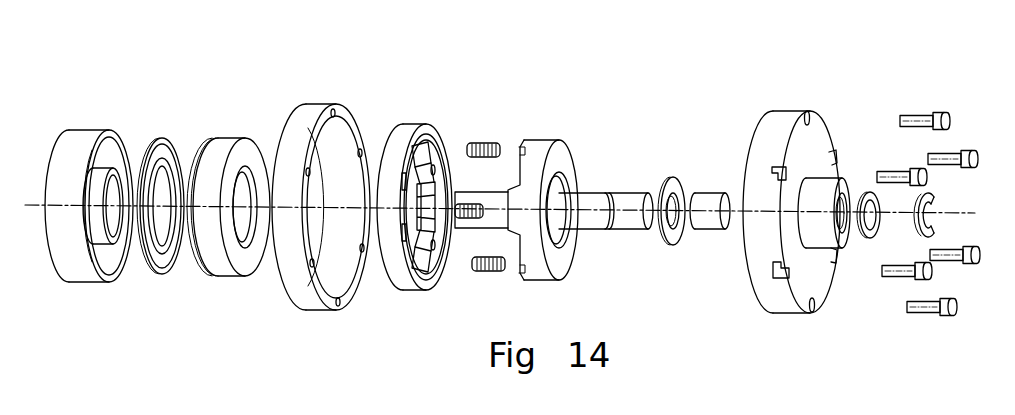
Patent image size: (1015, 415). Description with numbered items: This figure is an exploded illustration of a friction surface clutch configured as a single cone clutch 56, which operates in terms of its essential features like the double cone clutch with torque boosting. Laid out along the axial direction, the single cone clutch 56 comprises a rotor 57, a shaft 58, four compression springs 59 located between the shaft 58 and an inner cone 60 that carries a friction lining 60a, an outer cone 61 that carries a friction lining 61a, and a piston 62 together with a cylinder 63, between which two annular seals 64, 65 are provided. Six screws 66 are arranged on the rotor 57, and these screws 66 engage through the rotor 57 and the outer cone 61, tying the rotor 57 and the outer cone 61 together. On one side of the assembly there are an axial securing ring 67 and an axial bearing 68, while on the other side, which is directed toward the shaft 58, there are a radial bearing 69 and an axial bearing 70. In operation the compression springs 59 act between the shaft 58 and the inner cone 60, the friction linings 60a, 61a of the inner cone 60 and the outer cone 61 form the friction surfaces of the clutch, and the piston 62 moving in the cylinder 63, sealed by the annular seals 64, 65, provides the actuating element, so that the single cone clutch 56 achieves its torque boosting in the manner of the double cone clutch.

The single cone clutch 56 is at (362, 195).
The rotor 57 is at (788, 110).
The shaft 58 is at (543, 137).
The compression springs 59 is at (482, 141).
The inner cone 60 is at (414, 201).
The friction lining 60a is at (396, 280).
The outer cone 61 is at (321, 195).
The friction lining 61a is at (331, 282).
The piston 62 is at (232, 280).
The cylinder 63 is at (83, 283).
The annular seal 64 is at (156, 152).
The annular seal 65 is at (161, 170).
The screws 66 is at (921, 114).
The axial securing ring 67 is at (926, 196).
The axial bearing 68 is at (873, 240).
The radial bearing 69 is at (706, 191).
The axial bearing 70 is at (674, 176).